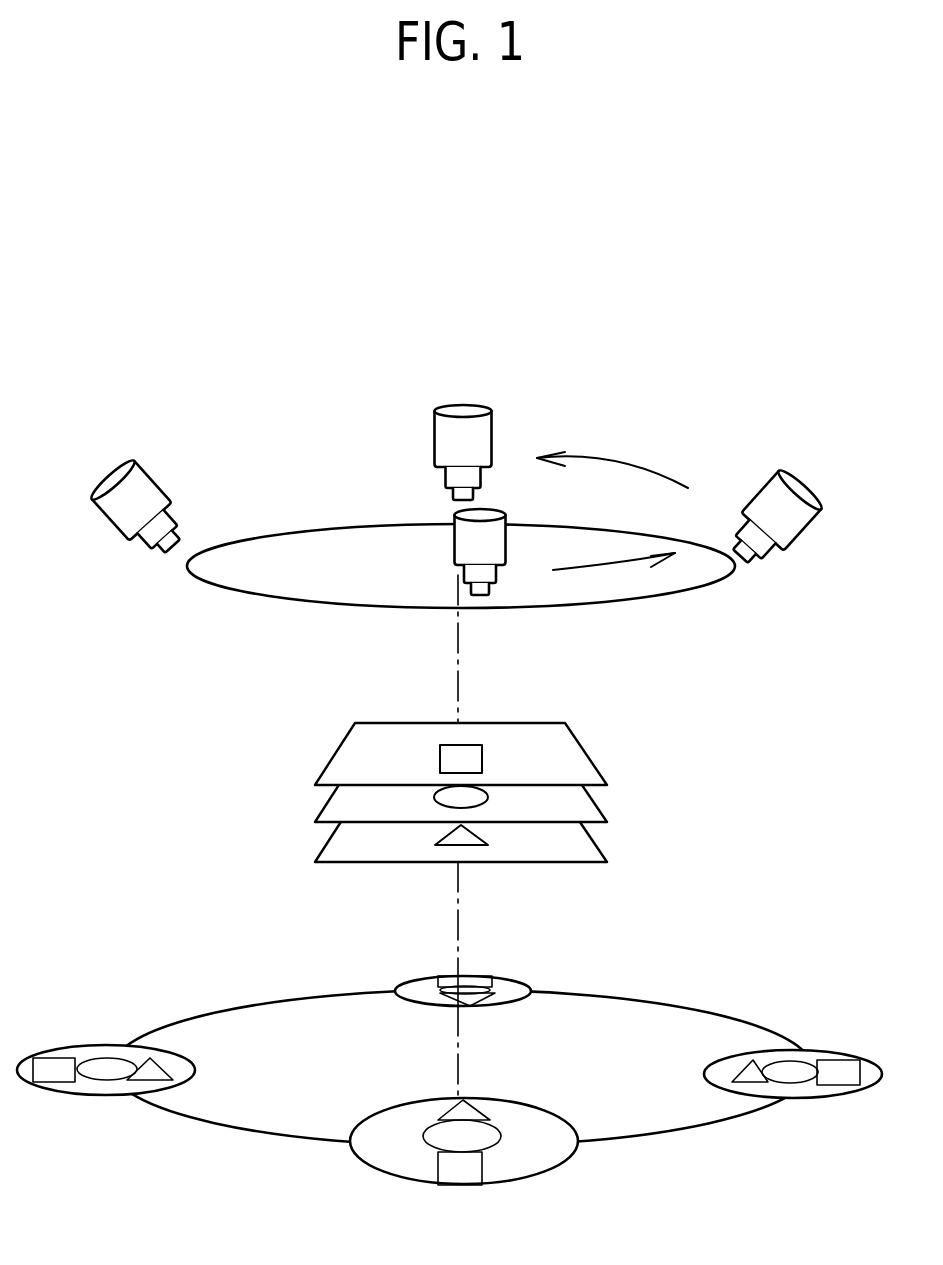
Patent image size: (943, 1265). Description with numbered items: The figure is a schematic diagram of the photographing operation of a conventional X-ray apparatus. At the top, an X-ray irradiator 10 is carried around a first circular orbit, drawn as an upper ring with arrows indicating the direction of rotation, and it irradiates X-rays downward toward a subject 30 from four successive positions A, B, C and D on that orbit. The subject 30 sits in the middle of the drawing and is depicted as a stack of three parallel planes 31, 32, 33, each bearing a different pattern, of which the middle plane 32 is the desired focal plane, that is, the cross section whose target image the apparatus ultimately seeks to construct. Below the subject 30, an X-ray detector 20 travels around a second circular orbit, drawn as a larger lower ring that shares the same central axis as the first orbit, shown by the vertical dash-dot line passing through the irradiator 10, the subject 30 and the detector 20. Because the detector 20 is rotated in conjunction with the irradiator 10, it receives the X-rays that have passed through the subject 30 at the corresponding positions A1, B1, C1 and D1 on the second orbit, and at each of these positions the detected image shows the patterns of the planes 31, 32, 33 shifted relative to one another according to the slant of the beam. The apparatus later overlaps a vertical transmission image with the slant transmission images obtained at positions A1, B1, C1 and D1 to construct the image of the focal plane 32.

The X-ray irradiator 10 is at (456, 585).
The X-ray detector 20 is at (429, 963).
The subject 30 is at (335, 785).
The first pattern plate (square) 31 is at (436, 746).
The desired focal plane 32 is at (330, 803).
The third pattern plate (triangle) 33 is at (328, 853).
The position A is at (494, 552).
The position B is at (772, 525).
The position C is at (447, 452).
The position D is at (141, 516).
The position A1 is at (463, 963).
The position B1 is at (106, 1043).
The position C1 is at (465, 1158).
The position D1 is at (793, 1049).